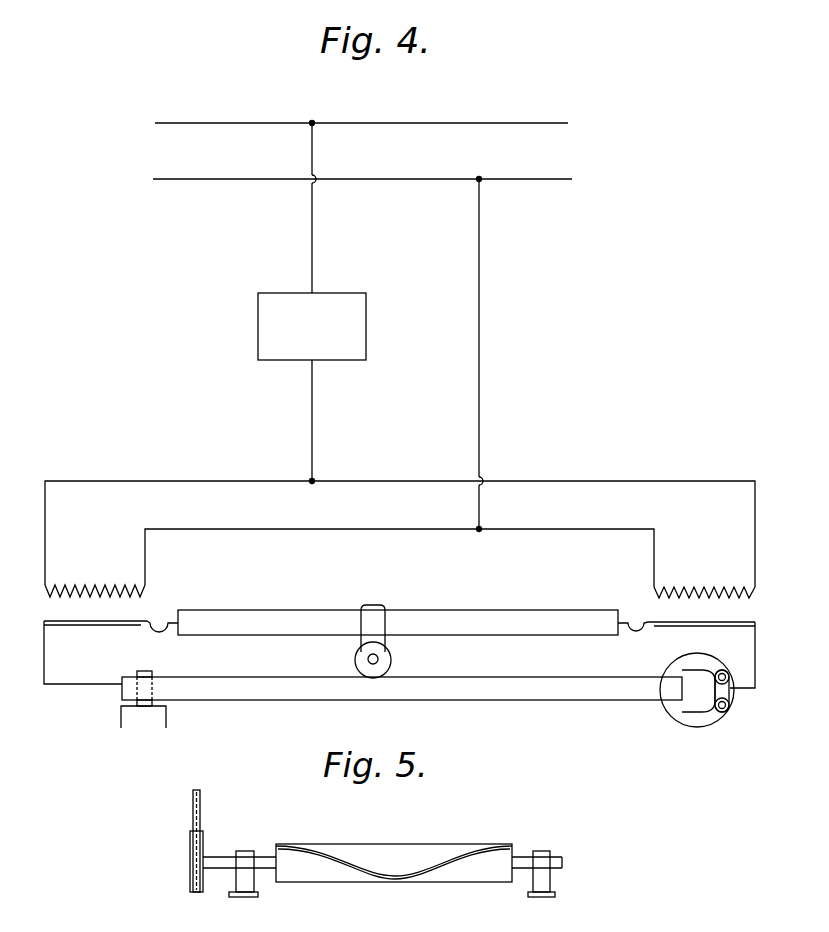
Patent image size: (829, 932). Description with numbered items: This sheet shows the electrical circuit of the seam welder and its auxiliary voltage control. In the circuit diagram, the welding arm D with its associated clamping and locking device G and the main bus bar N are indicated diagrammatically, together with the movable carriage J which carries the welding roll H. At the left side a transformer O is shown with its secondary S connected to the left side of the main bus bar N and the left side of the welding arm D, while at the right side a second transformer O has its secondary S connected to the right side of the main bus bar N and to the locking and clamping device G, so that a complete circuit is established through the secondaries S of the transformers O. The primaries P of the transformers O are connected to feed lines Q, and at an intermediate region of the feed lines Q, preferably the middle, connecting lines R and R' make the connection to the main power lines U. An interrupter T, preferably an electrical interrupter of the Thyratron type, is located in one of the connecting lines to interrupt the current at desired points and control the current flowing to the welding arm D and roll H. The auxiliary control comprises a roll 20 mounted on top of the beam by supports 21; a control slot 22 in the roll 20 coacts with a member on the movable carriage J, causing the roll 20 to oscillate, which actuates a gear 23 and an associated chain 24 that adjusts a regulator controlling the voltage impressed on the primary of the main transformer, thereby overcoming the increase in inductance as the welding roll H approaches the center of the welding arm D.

In FIG. 4, the main power lines U is at (183, 126).
In FIG. 4, the connecting line R is at (331, 302).
In FIG. 4, the connecting line R' is at (502, 354).
In FIG. 4, the interrupter T is at (312, 326).
In FIG. 4, the feed lines Q is at (400, 534).
In FIG. 4, the primaries P is at (120, 573).
In FIG. 4, the transformer O is at (405, 609).
In FIG. 4, the secondary S is at (68, 638).
In FIG. 4, the main bus bar N is at (398, 623).
In FIG. 4, the movable carriage J is at (387, 606).
In FIG. 4, the welding roll H is at (356, 660).
In FIG. 4, the welding arm D is at (401, 699).
In FIG. 4, the clamping and locking device G is at (697, 690).
In FIG. 5, the roll 20 is at (315, 880).
In FIG. 5, the supports 21 is at (232, 891).
In FIG. 5, the control slot 22 is at (374, 872).
In FIG. 5, the gear 23 is at (190, 878).
In FIG. 5, the chain 24 is at (193, 808).